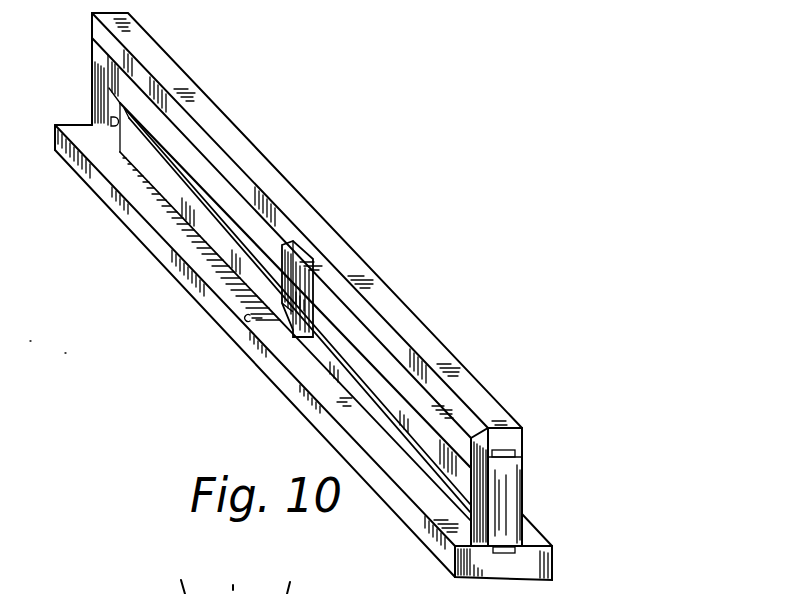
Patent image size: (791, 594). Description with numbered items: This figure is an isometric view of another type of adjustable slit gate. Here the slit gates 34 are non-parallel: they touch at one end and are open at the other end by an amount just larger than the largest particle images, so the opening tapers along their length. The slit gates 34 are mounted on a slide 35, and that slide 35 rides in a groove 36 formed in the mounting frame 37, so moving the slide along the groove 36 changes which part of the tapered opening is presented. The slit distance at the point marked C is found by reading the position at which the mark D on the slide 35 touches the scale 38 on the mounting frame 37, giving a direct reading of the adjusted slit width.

The slit gates 34 is at (215, 214).
The slide 35 is at (284, 247).
The groove 36 is at (335, 370).
The mounting frame 37 is at (323, 420).
The scale 38 is at (122, 178).